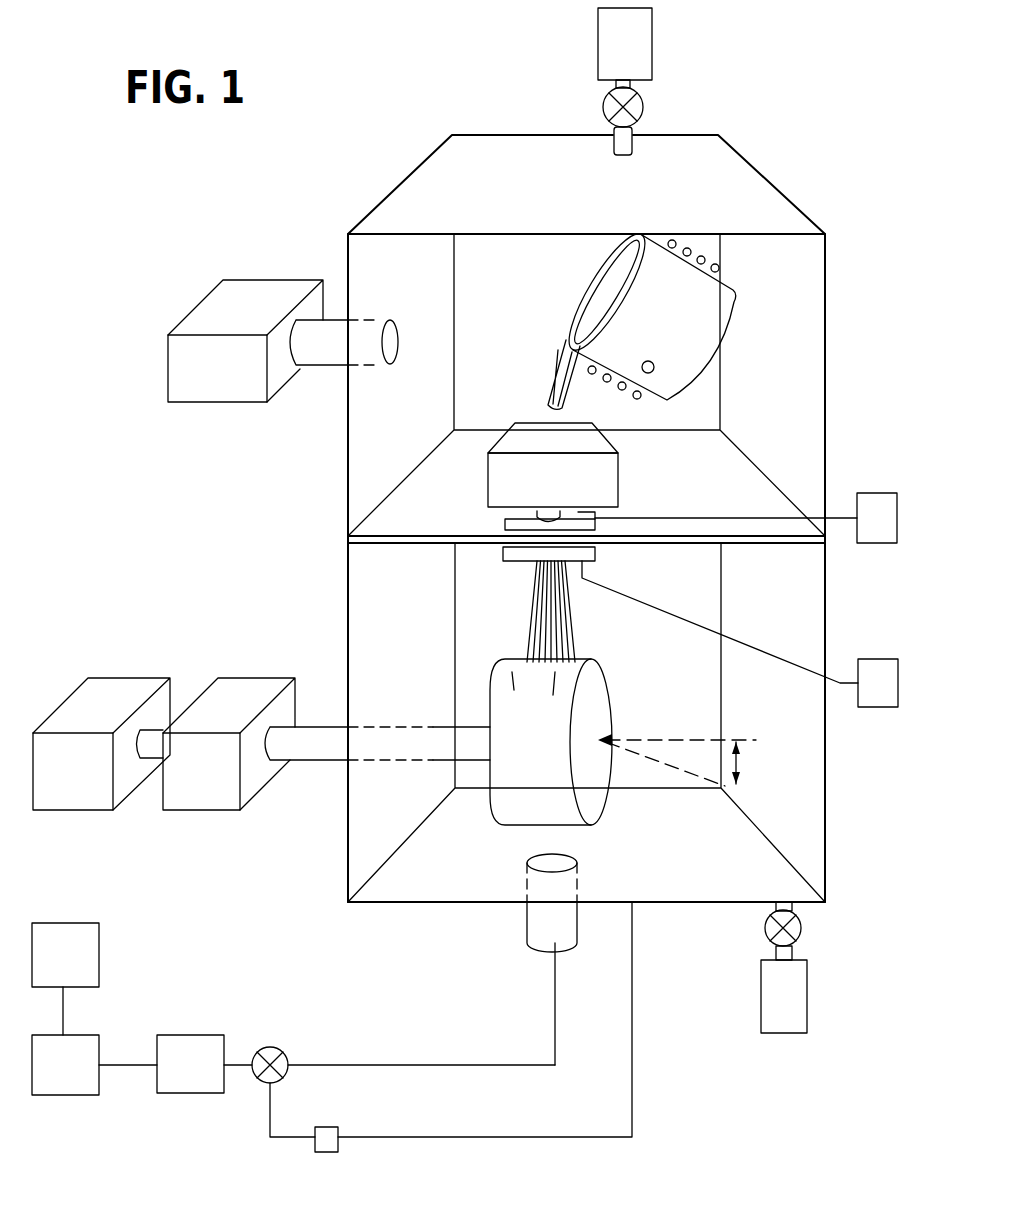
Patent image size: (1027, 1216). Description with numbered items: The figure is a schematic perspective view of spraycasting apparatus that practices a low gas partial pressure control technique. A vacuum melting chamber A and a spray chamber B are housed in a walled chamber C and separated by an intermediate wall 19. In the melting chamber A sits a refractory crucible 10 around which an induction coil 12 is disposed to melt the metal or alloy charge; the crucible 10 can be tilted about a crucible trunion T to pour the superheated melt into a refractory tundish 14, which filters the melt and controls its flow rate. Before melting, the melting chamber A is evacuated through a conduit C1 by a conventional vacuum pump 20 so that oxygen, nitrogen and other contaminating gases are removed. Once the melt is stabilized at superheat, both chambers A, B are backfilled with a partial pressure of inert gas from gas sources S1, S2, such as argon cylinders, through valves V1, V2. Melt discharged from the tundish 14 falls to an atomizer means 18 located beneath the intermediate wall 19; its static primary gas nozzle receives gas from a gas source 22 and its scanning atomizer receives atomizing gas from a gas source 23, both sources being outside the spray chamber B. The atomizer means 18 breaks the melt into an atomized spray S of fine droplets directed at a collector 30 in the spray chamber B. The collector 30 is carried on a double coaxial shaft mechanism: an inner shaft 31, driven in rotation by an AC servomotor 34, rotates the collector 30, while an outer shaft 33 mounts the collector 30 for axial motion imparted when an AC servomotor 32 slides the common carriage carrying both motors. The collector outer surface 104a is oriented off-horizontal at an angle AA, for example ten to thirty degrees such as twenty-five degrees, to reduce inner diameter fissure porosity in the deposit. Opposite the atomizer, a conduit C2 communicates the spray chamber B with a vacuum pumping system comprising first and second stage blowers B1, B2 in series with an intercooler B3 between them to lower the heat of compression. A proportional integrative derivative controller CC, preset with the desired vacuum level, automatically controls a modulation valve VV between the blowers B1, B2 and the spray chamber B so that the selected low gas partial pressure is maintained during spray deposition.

The vacuum melting chamber A is at (512, 273).
The spray chamber B is at (672, 842).
The walled chamber C is at (417, 904).
The gas source S1 is at (637, 62).
The valve V1 is at (643, 113).
The refractory crucible 10 is at (660, 275).
The induction coil 12 is at (705, 257).
The crucible trunion T is at (654, 372).
The vacuum pump 20 is at (178, 362).
The conduit C1 is at (337, 332).
The refractory tundish 14 is at (618, 479).
The gas source 22 is at (883, 503).
The intermediate wall 19 is at (778, 530).
The atomizer means 18 is at (524, 565).
The atomized metal or alloy spray S is at (567, 610).
The gas source 23 is at (875, 672).
The collector outer surface 104a is at (560, 690).
The collector 30 is at (614, 746).
The angle of collector surface AA is at (740, 762).
The outer shaft 33 is at (433, 752).
The AC servomotor 34 is at (77, 713).
The inner shaft 31 is at (153, 750).
The AC servomotor 32 is at (207, 773).
The conduit C2 is at (527, 933).
The valve V2 is at (802, 928).
The gas source S2 is at (787, 978).
The second stage blower B2 is at (72, 940).
The intercooler B3 is at (77, 1047).
The first stage blower B1 is at (192, 1048).
The modulation valve VV is at (270, 1047).
The proportional integrative derivative controller CC is at (330, 1152).